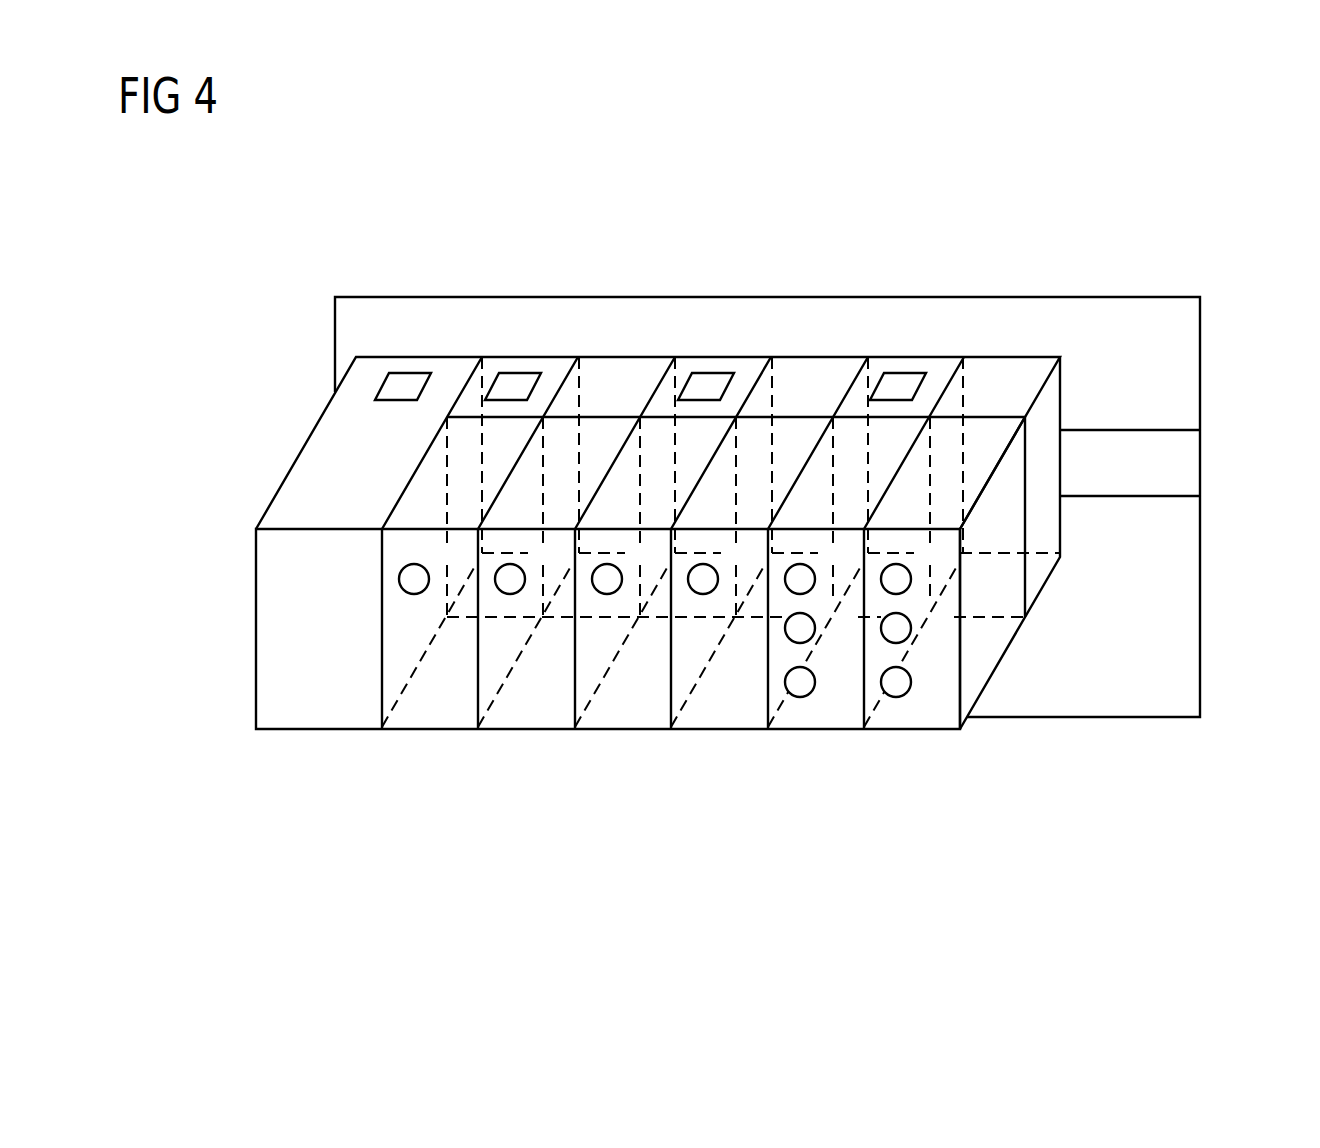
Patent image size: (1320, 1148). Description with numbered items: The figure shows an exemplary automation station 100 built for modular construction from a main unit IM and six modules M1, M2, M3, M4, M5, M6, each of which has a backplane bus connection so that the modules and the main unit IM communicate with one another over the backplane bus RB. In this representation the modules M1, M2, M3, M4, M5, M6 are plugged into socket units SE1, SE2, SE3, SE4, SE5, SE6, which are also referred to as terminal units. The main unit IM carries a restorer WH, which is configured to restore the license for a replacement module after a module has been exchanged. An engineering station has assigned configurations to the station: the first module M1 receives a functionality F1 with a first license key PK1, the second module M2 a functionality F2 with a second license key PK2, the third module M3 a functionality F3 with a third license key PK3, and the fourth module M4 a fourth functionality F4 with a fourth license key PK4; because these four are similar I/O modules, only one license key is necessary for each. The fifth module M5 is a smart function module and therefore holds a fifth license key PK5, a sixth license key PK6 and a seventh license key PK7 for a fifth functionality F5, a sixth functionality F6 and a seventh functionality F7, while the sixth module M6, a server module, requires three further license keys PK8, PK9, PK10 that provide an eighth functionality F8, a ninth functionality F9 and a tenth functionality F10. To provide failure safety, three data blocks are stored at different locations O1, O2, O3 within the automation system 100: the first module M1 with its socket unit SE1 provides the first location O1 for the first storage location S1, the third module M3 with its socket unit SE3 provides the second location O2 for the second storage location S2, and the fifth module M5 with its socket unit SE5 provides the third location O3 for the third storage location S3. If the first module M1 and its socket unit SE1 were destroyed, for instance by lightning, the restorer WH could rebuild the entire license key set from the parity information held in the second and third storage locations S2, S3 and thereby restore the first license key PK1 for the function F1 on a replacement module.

The automation station 100 is at (353, 237).
The backplane bus RB is at (1200, 461).
The main unit IM is at (322, 730).
The restorer WH is at (400, 387).
The first module M1 is at (432, 730).
The second module M2 is at (530, 730).
The third module M3 is at (627, 730).
The fourth module M4 is at (725, 730).
The fifth module M5 is at (840, 730).
The sixth module M6 is at (937, 730).
The first storage location S1 is at (508, 385).
The second storage location S2 is at (705, 383).
The third storage location S3 is at (892, 383).
The first location O1 is at (528, 347).
The second location O2 is at (720, 347).
The third location O3 is at (912, 350).
The first socket unit SE1 is at (560, 373).
The second socket unit SE2 is at (635, 373).
The third socket unit SE3 is at (757, 373).
The fourth socket unit SE4 is at (823, 373).
The fifth socket unit SE5 is at (945, 373).
The sixth socket unit SE6 is at (1002, 373).
The first license key PK1 is at (399, 579).
The second license key PK2 is at (509, 594).
The third license key PK3 is at (605, 594).
The fourth license key PK4 is at (702, 594).
The fifth license key PK5 is at (800, 564).
The sixth license key PK6 is at (788, 641).
The seventh license key PK7 is at (803, 697).
The eighth license key PK8 is at (896, 564).
The ninth license key PK9 is at (911, 630).
The tenth license key PK10 is at (911, 680).
The first functionality F1 is at (454, 551).
The second functionality F2 is at (550, 551).
The third functionality F3 is at (647, 551).
The fourth functionality F4 is at (743, 551).
The fifth functionality F5 is at (840, 551).
The sixth functionality F6 is at (840, 605).
The seventh functionality F7 is at (840, 706).
The eighth functionality F8 is at (936, 551).
The ninth functionality F9 is at (936, 605).
The tenth functionality F10 is at (935, 706).